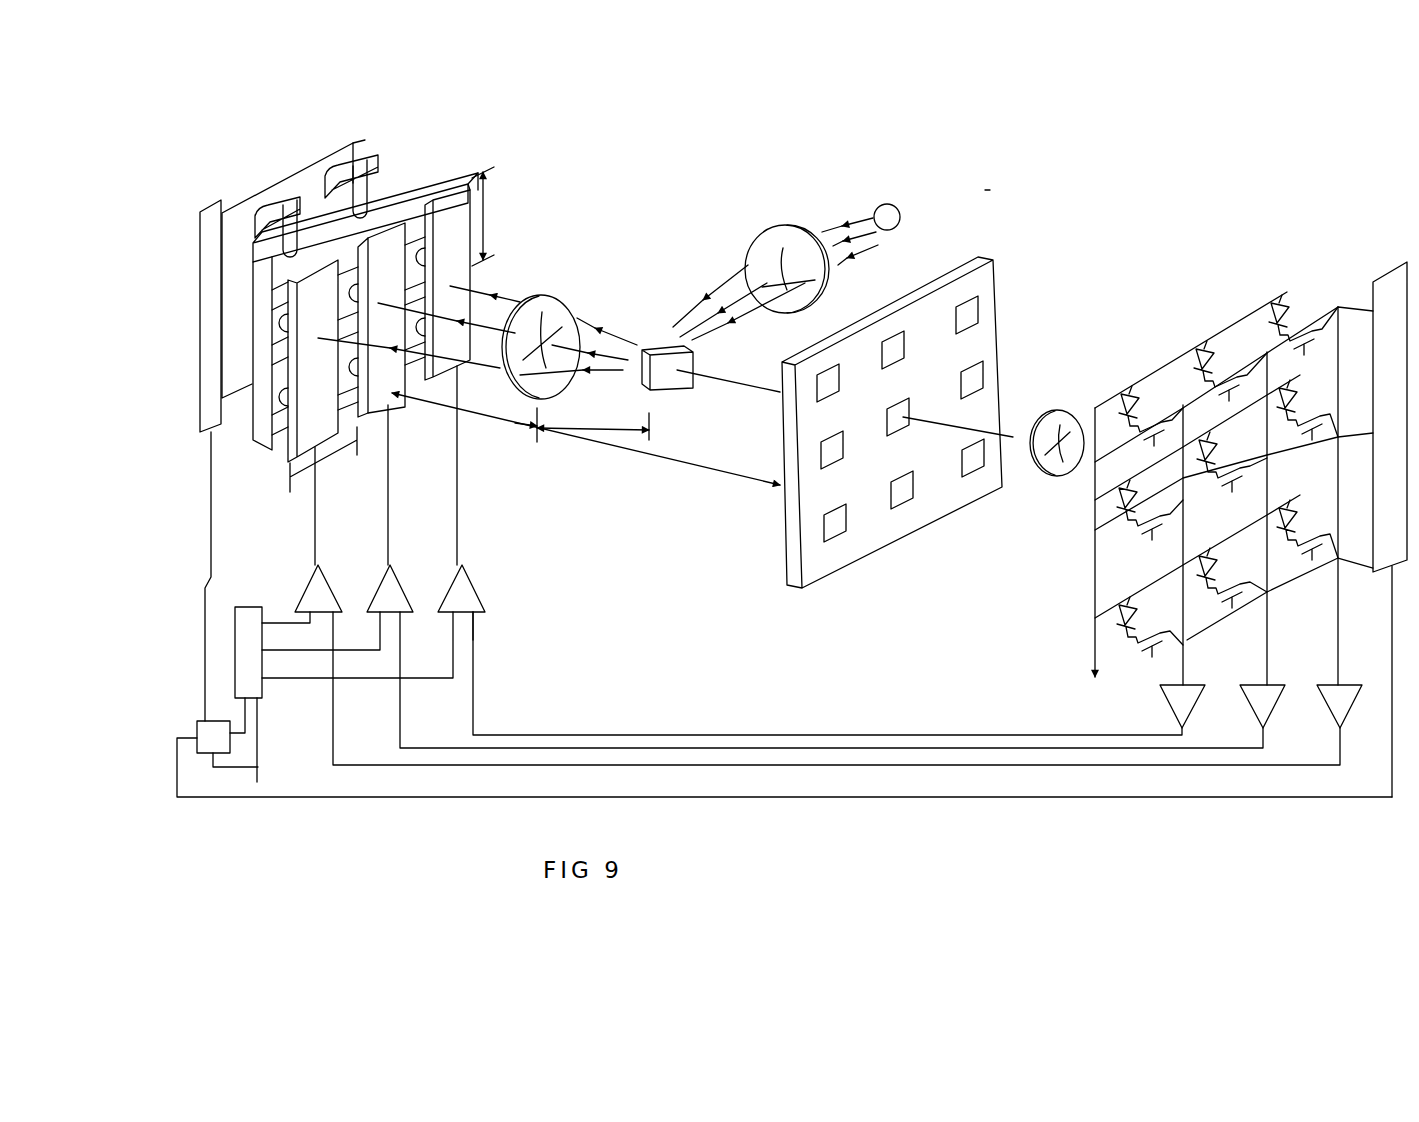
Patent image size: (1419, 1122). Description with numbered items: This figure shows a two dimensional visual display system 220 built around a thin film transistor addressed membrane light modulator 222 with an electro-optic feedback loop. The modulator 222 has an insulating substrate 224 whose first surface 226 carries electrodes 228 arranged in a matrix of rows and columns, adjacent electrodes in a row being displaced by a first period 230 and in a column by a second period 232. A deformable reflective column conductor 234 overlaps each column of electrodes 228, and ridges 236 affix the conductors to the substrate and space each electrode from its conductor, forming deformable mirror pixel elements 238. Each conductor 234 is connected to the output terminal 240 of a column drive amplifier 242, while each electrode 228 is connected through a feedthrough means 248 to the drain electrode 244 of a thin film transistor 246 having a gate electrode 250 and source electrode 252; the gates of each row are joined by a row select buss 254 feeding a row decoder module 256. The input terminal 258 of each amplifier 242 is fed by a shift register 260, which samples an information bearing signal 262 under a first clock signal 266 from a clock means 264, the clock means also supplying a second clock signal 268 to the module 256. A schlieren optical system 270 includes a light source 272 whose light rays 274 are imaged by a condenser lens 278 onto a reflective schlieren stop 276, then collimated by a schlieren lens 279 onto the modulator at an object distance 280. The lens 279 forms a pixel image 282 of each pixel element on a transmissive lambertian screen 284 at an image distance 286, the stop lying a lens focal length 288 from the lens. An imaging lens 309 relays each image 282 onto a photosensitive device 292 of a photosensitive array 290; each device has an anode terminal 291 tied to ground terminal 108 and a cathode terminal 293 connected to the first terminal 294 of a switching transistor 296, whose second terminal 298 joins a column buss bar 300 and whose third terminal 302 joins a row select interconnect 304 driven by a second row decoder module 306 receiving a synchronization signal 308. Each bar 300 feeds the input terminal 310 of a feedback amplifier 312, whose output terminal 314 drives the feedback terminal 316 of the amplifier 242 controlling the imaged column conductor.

The ground terminal 108 is at (1085, 670).
The two dimensional visual display system 220 is at (990, 190).
The thin film transistor addressed membrane light modulator 222 is at (587, 150).
The insulating substrate 224 is at (412, 177).
The first surface 226 is at (430, 180).
The electrodes 228 is at (273, 405).
The first period 230 is at (333, 452).
The second period 232 is at (488, 202).
The deformable reflective column conductor 234 is at (395, 398).
The ridges 236 is at (442, 177).
The deformable mirror pixel elements 238 is at (455, 250).
The output terminal 240 is at (465, 562).
The column drive amplifier 242 is at (320, 593).
The drain electrode 244 is at (360, 177).
The thin film transistor 246 is at (268, 222).
The feedthrough means 248 is at (270, 237).
The gate electrode 250 is at (370, 160).
The source electrode 252 is at (375, 163).
The row select buss 254 is at (237, 207).
The row decoder module 256 is at (212, 215).
The input terminal 258 is at (456, 620).
The shift register 260 is at (243, 610).
The information bearing signal 262 is at (262, 760).
The clock means 264 is at (207, 745).
The first clock signal 266 is at (250, 710).
The second clock signal 268 is at (222, 532).
The schlieren optical system 270 is at (710, 230).
The light source 272 is at (880, 203).
The light rays 274 is at (878, 243).
The reflective schlieren stop 276 is at (670, 378).
The condenser lens 278 is at (800, 235).
The schlieren lens 279 is at (558, 312).
The object distance 280 is at (503, 422).
The pixel image 282 is at (972, 313).
The transmissive lambertian screen 284 is at (983, 282).
The image distance 286 is at (728, 473).
The lens focal length 288 is at (608, 432).
The photosensitive array 290 is at (1208, 300).
The anode terminal 291 is at (1095, 530).
The photosensitive devices 292 is at (1290, 300).
The cathode terminal 293 is at (1145, 395).
The first terminal 294 is at (1095, 462).
The switching transistor 296 is at (1312, 305).
The second terminal 298 is at (1325, 305).
The column buss bar 300 is at (1335, 587).
The third terminal 302 is at (1148, 550).
The row select interconnect 304 is at (1168, 662).
The second row decoder module 306 is at (1398, 285).
The synchronization signal 308 is at (1392, 607).
The imaging lens 309 is at (1037, 423).
The input terminal 310 is at (1337, 682).
The feedback amplifier 312 is at (1347, 703).
The output terminal 314 is at (1338, 727).
The feedback terminal 316 is at (476, 608).